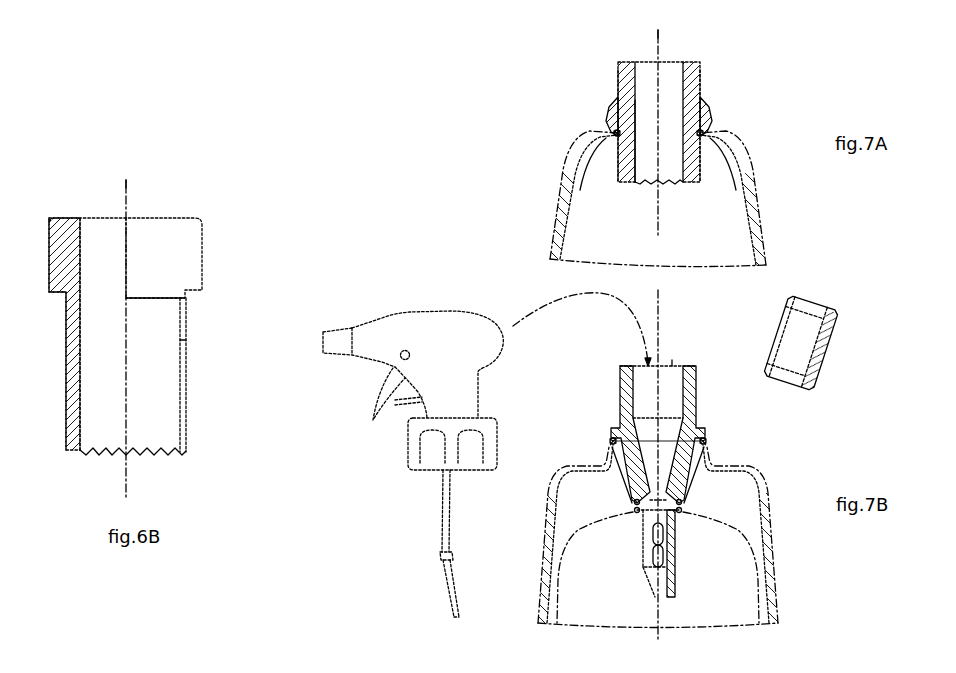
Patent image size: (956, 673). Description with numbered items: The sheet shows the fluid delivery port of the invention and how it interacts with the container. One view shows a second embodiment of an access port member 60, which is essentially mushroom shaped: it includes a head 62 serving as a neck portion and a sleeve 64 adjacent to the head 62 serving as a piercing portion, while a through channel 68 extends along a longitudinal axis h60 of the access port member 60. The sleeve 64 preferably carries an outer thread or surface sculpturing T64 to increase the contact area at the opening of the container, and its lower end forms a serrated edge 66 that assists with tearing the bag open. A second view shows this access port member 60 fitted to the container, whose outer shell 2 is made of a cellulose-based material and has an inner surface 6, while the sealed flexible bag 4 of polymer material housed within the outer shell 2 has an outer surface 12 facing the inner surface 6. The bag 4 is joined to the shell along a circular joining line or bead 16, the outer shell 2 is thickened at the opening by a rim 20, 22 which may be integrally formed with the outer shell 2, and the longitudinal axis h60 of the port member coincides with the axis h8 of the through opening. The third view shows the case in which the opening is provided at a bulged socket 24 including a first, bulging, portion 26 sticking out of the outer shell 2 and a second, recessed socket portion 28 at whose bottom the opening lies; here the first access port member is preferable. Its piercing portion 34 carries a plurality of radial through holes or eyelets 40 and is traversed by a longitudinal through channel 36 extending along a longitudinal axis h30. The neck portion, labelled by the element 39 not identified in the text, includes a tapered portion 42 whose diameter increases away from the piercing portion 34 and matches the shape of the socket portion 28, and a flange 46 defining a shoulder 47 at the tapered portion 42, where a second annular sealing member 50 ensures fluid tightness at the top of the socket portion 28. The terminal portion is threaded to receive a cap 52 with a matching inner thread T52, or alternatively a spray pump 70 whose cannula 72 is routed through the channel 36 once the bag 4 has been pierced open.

In FIG. 7A, the outer shell 2 is at (576, 134).
In FIG. 7B, the outer shell 2 is at (773, 576).
In FIG. 7A, the sealed flexible bag 4 is at (735, 195).
In FIG. 7B, the sealed flexible bag 4 is at (678, 550).
In FIG. 7A, the inner surface 6 is at (735, 140).
In FIG. 7A, the outer surface 12 is at (566, 172).
In FIG. 7A, the joining line or bead 16 is at (616, 138).
In FIG. 7A, the additional rim 20 is at (612, 110).
In FIG. 7A, the rim 22 is at (609, 110).
In FIG. 7B, the bulged socket 24 is at (700, 481).
In FIG. 7B, the first bulging portion 26 is at (710, 450).
In FIG. 7B, the second recessed socket portion 28 is at (689, 506).
In FIG. 7B, the piercing portion 34 is at (657, 582).
In FIG. 7B, the longitudinal through channel 36 is at (658, 401).
In FIG. 7B, the nozzle 39 is at (711, 407).
In FIG. 7B, the radial through holes or eyelets 40 is at (643, 562).
In FIG. 7B, the tapered portion 42 is at (621, 479).
In FIG. 7B, the flange 46 is at (611, 438).
In FIG. 7B, the shoulder 47 is at (634, 506).
In FIG. 7B, the second sealing member 50 is at (609, 440).
In FIG. 7B, the cap 52 is at (836, 299).
In FIG. 6B, the access port member 60 is at (213, 221).
In FIG. 7A, the access port member 60 is at (603, 63).
In FIG. 6B, the head 62 is at (154, 232).
In FIG. 7A, the head 62 is at (699, 86).
In FIG. 6B, the sleeve 64 is at (187, 376).
In FIG. 7A, the sleeve 64 is at (647, 170).
In FIG. 6B, the serrated edge 66 is at (142, 456).
In FIG. 7A, the serrated edge 66 is at (675, 186).
In FIG. 6B, the through channel 68 is at (100, 236).
In FIG. 7A, the through channel 68 is at (703, 112).
In FIG. 7B, the spray pump 70 is at (449, 307).
In FIG. 7B, the cannula 72 is at (458, 583).
In FIG. 7B, the inner thread T52 is at (619, 392).
In FIG. 6B, the outer thread or surface sculpturing T64 is at (187, 341).
In FIG. 6B, the longitudinal axis h60 is at (126, 186).
In FIG. 7A, the longitudinal axis h60 is at (752, 46).
In FIG. 7A, the axis h8 is at (660, 44).
In FIG. 7B, the longitudinal axis h30 is at (842, 358).